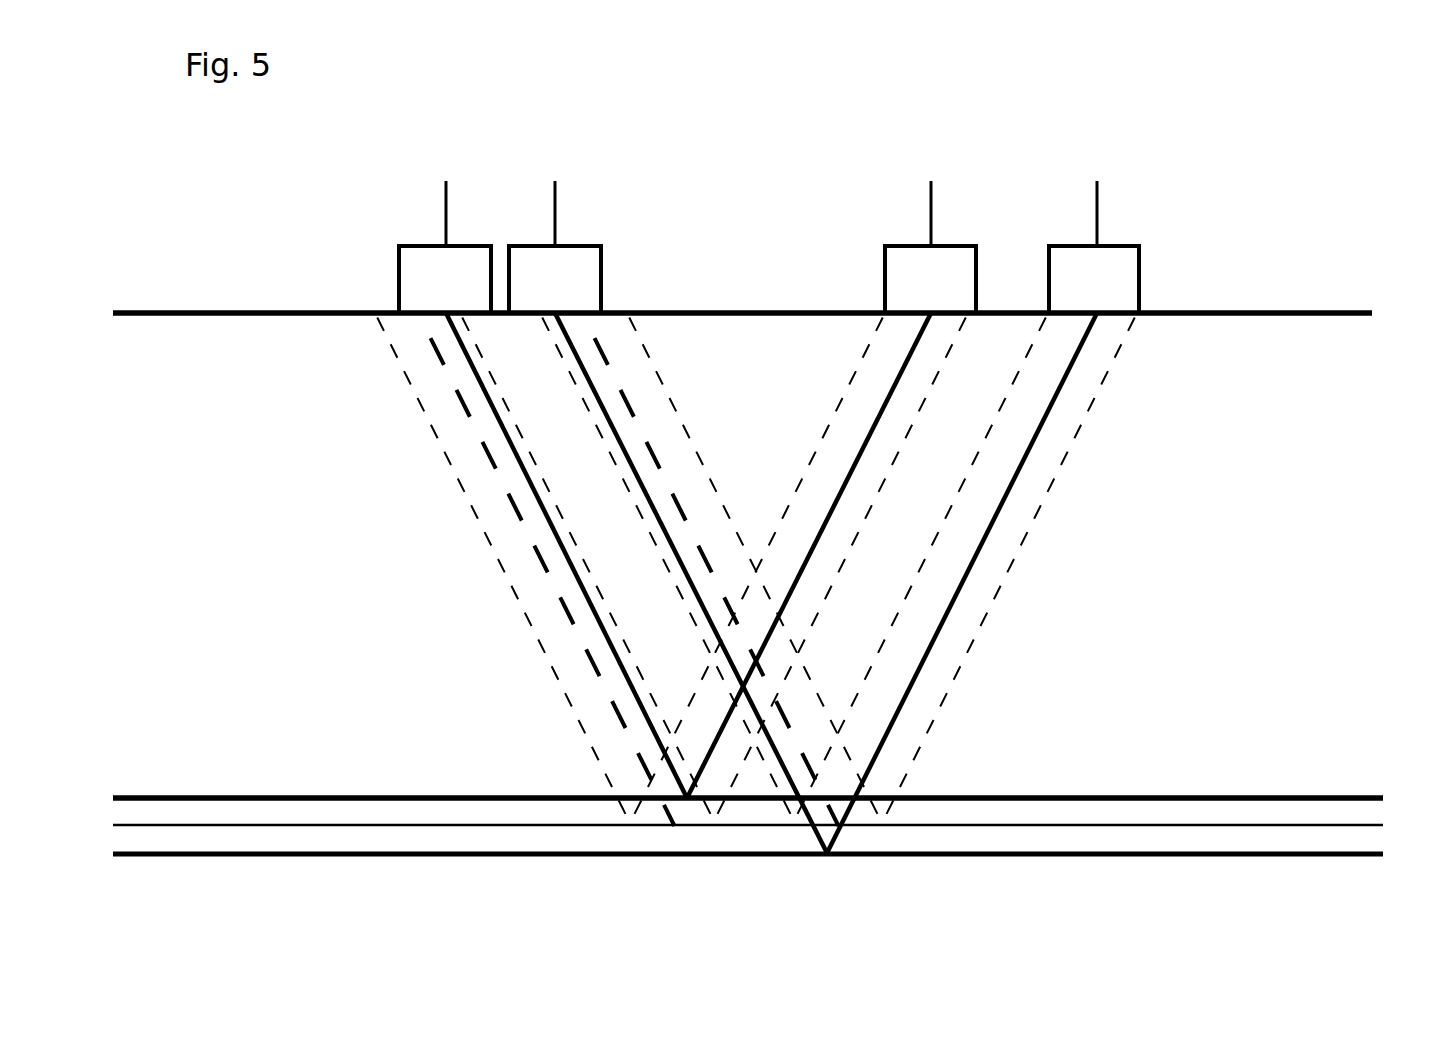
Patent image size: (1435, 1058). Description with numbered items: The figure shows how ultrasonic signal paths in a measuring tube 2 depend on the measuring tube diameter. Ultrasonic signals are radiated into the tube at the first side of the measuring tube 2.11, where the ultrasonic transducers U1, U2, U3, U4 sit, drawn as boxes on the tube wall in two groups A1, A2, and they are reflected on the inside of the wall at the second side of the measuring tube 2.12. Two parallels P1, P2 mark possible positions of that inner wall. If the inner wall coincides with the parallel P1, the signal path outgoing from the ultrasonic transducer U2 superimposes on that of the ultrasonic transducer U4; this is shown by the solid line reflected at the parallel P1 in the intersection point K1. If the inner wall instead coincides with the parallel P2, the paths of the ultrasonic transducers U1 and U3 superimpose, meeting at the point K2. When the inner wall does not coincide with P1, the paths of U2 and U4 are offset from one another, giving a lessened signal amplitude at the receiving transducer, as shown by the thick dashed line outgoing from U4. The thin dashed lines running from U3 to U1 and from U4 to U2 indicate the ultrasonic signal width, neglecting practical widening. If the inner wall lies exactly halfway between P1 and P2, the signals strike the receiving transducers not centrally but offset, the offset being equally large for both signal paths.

The measuring tube 2 is at (1277, 317).
The first side of the measuring tube 2.11 is at (200, 297).
The second side of the measuring tube 2.12 is at (223, 783).
The ultrasonic transducer U1 is at (413, 230).
The ultrasonic transducer U2 is at (595, 230).
The ultrasonic transducer U3 is at (895, 232).
The ultrasonic transducer U4 is at (1133, 232).
The first transducer arrangement A1 is at (590, 477).
The second transducer arrangement A2 is at (965, 479).
The intersection point K1 is at (827, 853).
The second intersection point of sound beams K2 is at (685, 798).
The parallel P1 is at (1320, 867).
The parallel P2 is at (1338, 783).